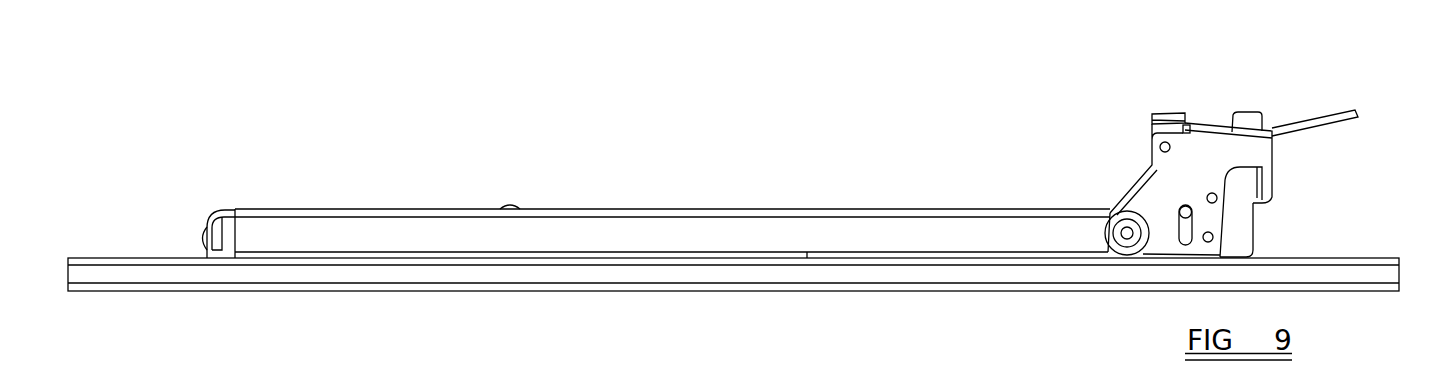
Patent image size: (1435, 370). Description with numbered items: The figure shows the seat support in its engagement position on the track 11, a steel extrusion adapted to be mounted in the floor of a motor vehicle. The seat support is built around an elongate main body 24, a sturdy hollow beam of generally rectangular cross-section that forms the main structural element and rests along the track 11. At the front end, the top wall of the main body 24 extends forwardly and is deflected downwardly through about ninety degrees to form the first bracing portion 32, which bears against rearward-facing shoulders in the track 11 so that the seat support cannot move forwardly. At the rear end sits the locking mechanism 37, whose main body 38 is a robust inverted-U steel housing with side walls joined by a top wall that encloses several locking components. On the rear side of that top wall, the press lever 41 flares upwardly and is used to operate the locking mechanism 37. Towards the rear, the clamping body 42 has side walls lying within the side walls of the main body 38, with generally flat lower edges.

The track 11 is at (835, 280).
The main body 24 is at (713, 232).
The first bracing portion 32 is at (200, 238).
The locking mechanism 37 is at (1163, 105).
The main body 38 is at (1178, 172).
The press lever 41 is at (1325, 112).
The clamping body 42 is at (1240, 225).